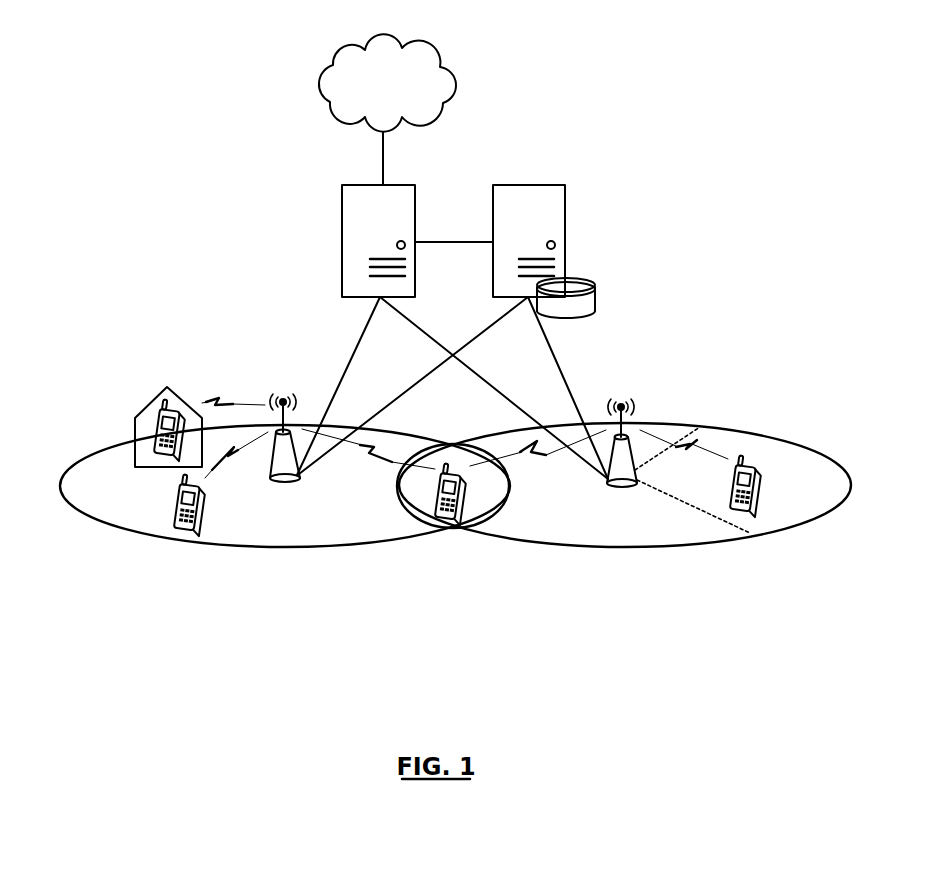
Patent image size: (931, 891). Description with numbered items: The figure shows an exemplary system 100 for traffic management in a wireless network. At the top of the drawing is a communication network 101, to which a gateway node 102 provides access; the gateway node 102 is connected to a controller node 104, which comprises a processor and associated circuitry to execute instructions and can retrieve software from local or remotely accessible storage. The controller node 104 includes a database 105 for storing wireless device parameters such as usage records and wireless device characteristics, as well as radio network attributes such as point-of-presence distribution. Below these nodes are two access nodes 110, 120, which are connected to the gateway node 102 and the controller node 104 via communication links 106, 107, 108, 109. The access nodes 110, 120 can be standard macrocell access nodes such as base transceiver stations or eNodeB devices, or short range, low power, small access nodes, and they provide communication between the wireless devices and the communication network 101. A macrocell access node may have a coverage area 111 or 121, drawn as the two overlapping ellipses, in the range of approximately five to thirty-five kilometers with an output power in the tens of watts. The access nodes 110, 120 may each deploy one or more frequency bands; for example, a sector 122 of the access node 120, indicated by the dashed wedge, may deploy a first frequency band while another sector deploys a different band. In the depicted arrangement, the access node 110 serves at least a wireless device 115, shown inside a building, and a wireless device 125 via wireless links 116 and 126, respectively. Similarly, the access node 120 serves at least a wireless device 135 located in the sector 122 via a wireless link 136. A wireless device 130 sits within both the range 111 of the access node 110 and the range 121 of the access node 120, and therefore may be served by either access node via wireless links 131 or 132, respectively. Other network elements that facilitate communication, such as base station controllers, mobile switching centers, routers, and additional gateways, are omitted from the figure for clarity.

The system 100 is at (577, 34).
The communication network 101 is at (361, 93).
The gateway node 102 is at (383, 239).
The controller node 104 is at (565, 236).
The database 105 is at (603, 288).
The communication link 106 is at (332, 386).
The communication link 107 is at (413, 385).
The communication link 108 is at (494, 388).
The communication link 109 is at (579, 388).
The access node 110 is at (248, 397).
The coverage area 111 is at (285, 502).
The wireless device 115 is at (141, 421).
The wireless link 116 is at (203, 377).
The access node 120 is at (650, 419).
The coverage area 121 is at (625, 520).
The sector 122 is at (688, 506).
The wireless device 125 is at (152, 505).
The wireless link 126 is at (256, 479).
The wireless device 130 is at (462, 507).
The wireless link 131 is at (368, 459).
The wireless link 132 is at (538, 473).
The wireless device 135 is at (778, 467).
The wireless link 136 is at (704, 429).